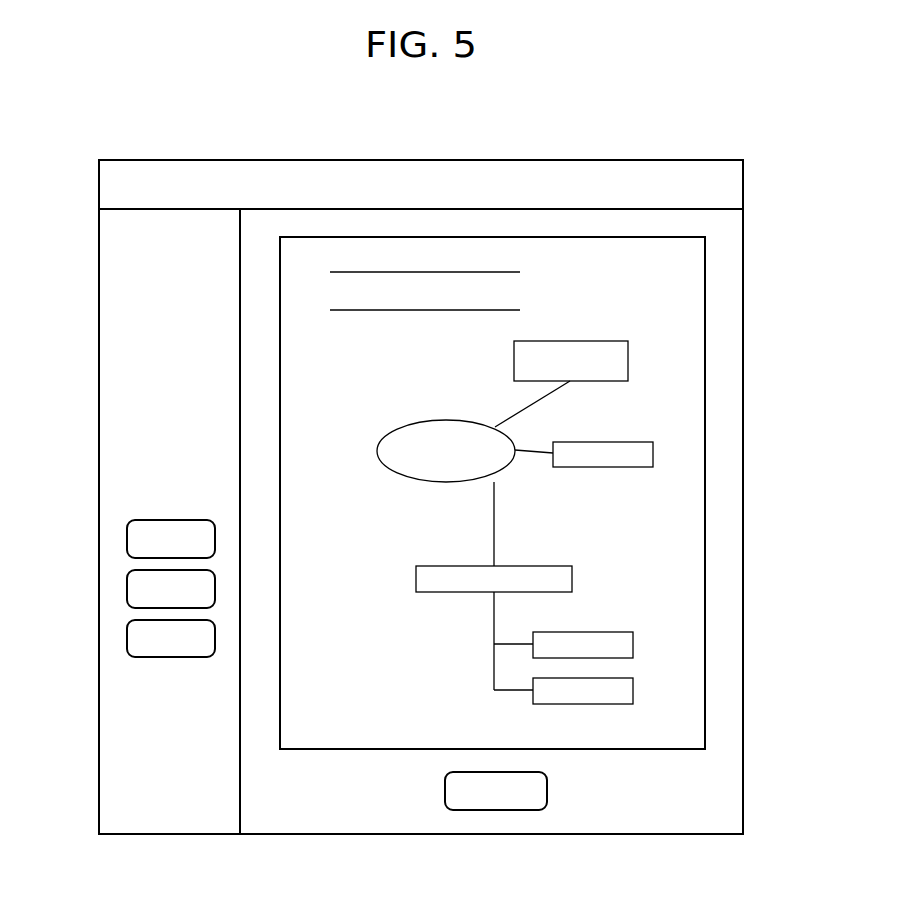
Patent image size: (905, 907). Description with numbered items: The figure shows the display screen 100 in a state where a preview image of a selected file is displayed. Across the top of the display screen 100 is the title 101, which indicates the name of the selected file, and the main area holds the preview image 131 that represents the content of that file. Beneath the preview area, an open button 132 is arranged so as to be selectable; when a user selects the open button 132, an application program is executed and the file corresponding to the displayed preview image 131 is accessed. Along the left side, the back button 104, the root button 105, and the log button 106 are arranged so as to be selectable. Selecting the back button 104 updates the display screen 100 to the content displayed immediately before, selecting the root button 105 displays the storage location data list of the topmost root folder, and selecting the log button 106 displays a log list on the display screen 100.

The display screen 100 is at (483, 834).
The title 101 is at (423, 189).
The back button 104 is at (127, 538).
The root button 105 is at (127, 588).
The log button 106 is at (127, 636).
The preview image 131 is at (705, 518).
The open button 132 is at (547, 790).